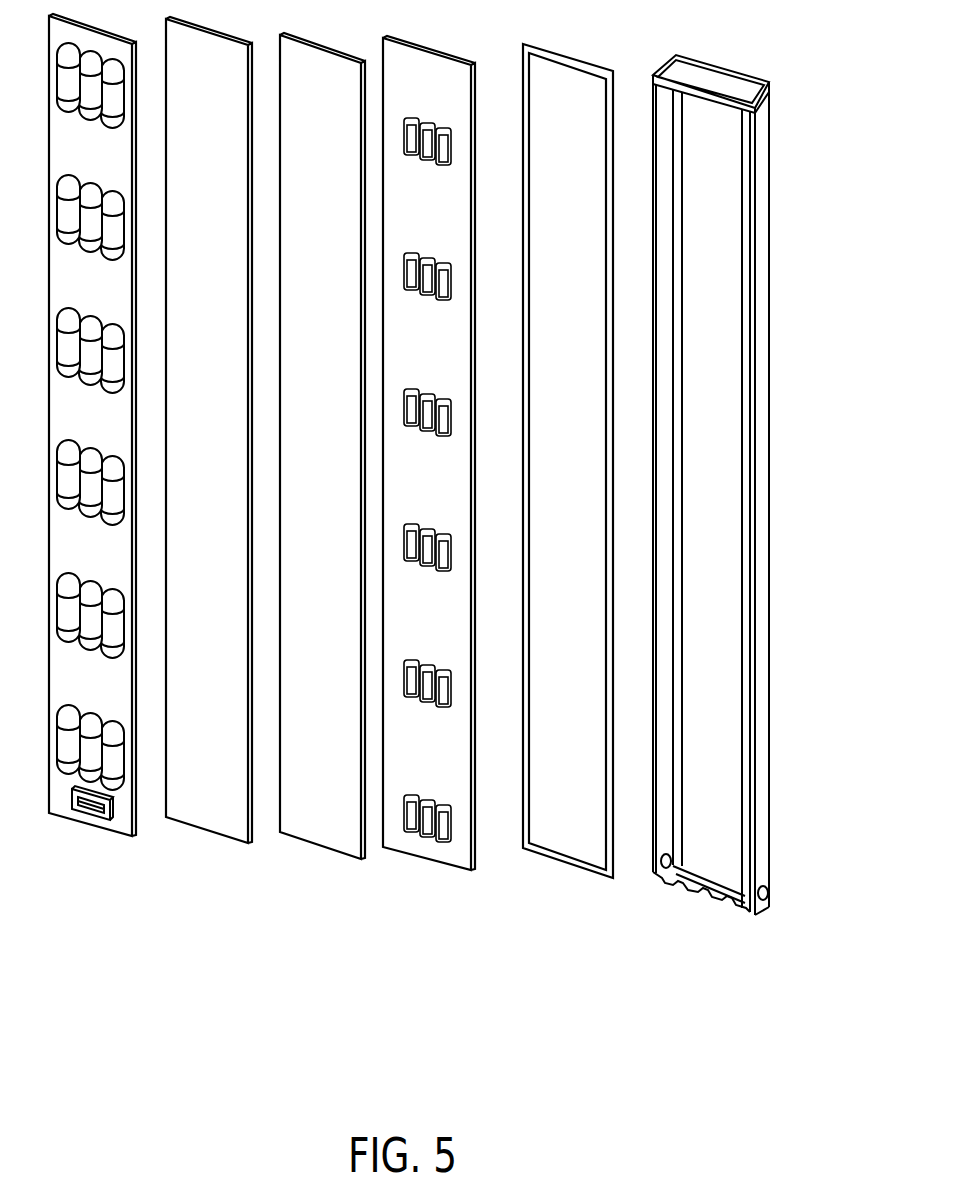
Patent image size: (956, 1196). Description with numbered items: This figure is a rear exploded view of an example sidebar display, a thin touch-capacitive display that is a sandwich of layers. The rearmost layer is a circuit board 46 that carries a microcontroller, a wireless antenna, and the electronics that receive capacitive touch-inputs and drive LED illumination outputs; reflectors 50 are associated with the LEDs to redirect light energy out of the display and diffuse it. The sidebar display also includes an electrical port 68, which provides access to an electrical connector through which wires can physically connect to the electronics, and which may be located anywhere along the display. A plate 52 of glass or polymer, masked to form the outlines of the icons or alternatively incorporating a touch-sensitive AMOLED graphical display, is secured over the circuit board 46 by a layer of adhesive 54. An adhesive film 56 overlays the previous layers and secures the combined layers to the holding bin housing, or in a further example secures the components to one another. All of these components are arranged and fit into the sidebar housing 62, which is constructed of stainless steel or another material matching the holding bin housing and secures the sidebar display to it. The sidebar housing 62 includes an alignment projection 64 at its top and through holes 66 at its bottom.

The circuit board 46 is at (222, 830).
The reflectors 50 is at (118, 827).
The plate 52 is at (455, 857).
The layer of adhesive 54 is at (327, 842).
The adhesive film 56 is at (585, 870).
The sidebar housing 62 is at (723, 513).
The alignment projection 64 is at (769, 85).
The through holes 66 is at (660, 877).
The electrical port 68 is at (88, 812).